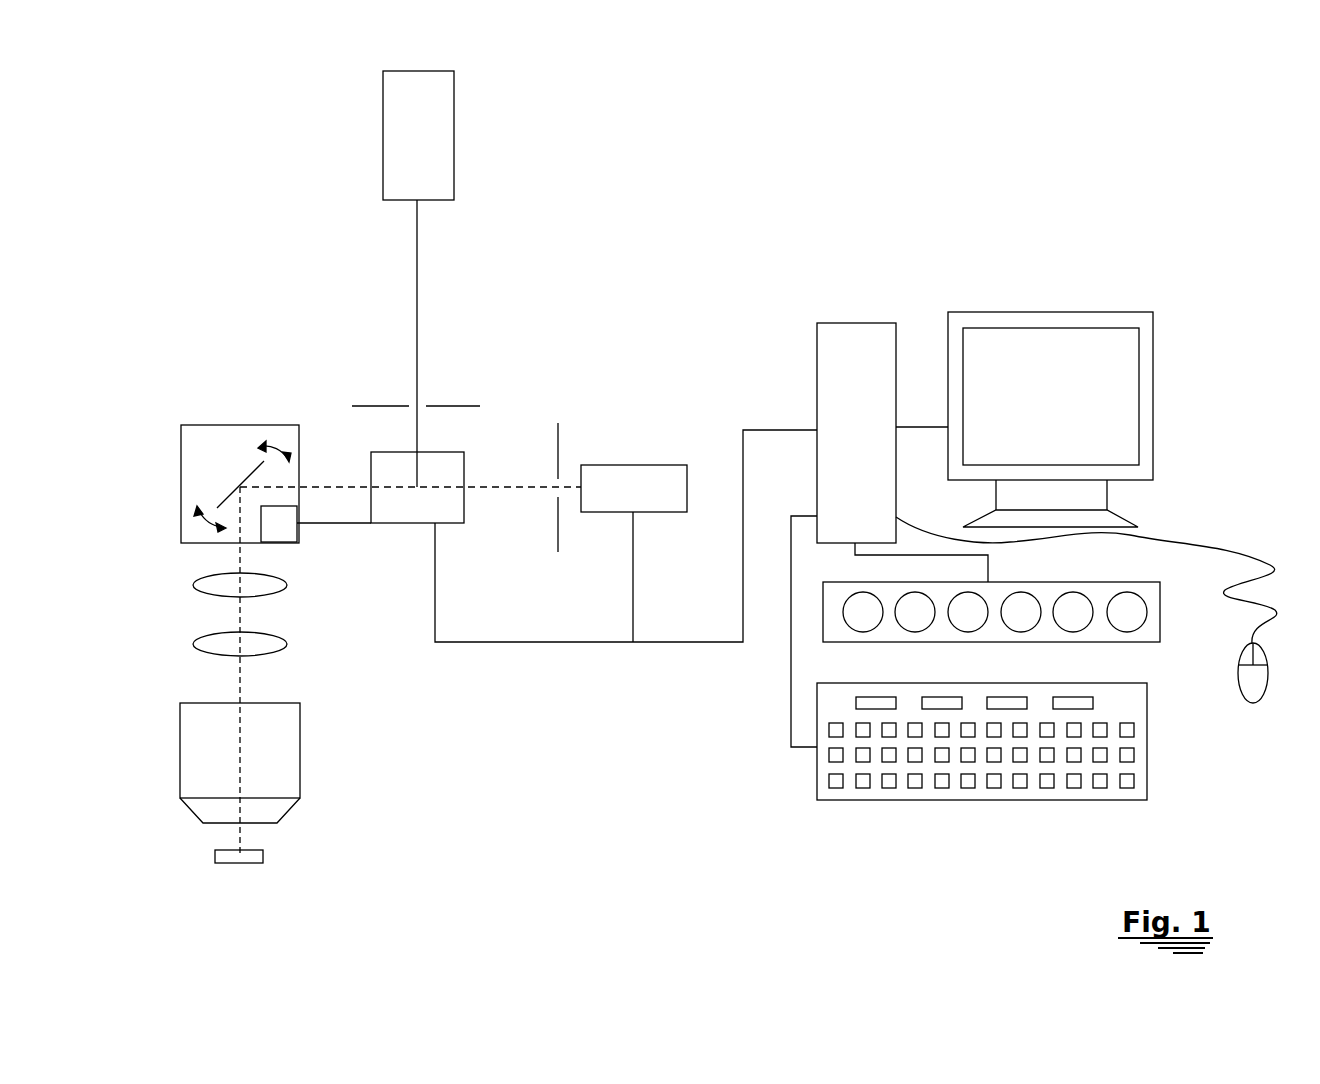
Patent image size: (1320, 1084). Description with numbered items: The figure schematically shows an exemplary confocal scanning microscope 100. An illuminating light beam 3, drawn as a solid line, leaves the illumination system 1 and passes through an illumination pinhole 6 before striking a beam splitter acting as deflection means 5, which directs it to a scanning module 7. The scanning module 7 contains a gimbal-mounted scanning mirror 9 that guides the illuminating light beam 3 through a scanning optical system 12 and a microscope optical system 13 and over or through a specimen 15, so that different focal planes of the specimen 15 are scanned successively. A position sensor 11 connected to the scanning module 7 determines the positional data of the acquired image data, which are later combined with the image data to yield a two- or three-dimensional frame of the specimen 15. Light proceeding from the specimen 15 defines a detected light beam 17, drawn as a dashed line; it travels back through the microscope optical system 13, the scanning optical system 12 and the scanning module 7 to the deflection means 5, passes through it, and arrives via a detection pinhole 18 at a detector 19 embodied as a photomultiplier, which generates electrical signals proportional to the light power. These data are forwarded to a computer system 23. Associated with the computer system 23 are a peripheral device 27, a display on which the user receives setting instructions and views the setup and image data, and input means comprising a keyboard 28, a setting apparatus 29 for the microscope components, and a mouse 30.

The illumination system 1 is at (441, 114).
The illuminating light beam 3 is at (417, 236).
The confocal scanning microscope 100 is at (496, 370).
The illumination pinhole 6 is at (372, 410).
The scanning module 7 is at (205, 448).
The scanning mirror 9 is at (228, 492).
The position sensor 11 is at (284, 530).
The deflection means 5 is at (435, 515).
The detected light beam 17 is at (477, 487).
The detection pinhole 18 is at (558, 447).
The detector 19 is at (602, 477).
The scanning optical system 12 is at (215, 585).
The microscope optical system 13 is at (203, 730).
The specimen 15 is at (228, 855).
The computer system 23 is at (823, 370).
The peripheral device 27 is at (1017, 352).
The setting apparatus 29 is at (1052, 587).
The keyboard 28 is at (1123, 706).
The mouse 30 is at (1250, 680).